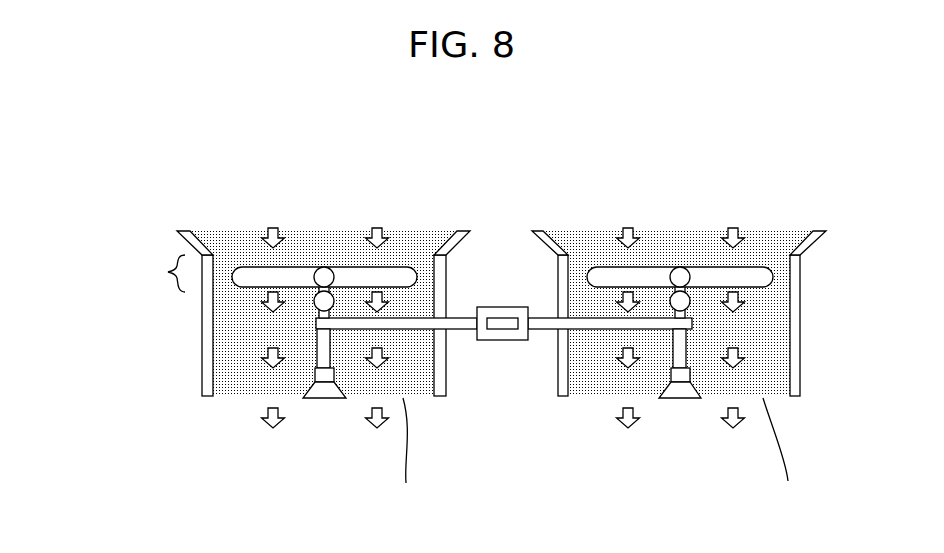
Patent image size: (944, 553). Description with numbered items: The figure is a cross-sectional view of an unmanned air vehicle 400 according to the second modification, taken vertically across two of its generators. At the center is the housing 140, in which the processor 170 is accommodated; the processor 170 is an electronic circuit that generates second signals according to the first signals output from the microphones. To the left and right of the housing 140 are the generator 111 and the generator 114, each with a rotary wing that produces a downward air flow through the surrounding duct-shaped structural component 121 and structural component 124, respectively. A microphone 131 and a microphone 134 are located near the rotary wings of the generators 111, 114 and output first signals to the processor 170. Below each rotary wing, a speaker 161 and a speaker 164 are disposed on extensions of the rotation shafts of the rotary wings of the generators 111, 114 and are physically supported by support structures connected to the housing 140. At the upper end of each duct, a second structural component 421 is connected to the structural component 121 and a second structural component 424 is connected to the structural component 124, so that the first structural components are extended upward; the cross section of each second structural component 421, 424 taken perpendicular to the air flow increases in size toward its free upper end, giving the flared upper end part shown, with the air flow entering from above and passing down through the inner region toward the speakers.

The unmanned air vehicle 400 is at (699, 118).
The second structural component 421 is at (184, 229).
The second structural component 424 is at (537, 231).
The structural component 121 is at (207, 398).
The structural component 124 is at (563, 397).
The generator 111 is at (403, 265).
The generator 114 is at (758, 265).
The microphone 131 is at (314, 301).
The microphone 134 is at (690, 302).
The housing 140 is at (497, 307).
The processor 170 is at (500, 340).
The speaker 161 is at (325, 398).
The speaker 164 is at (680, 398).